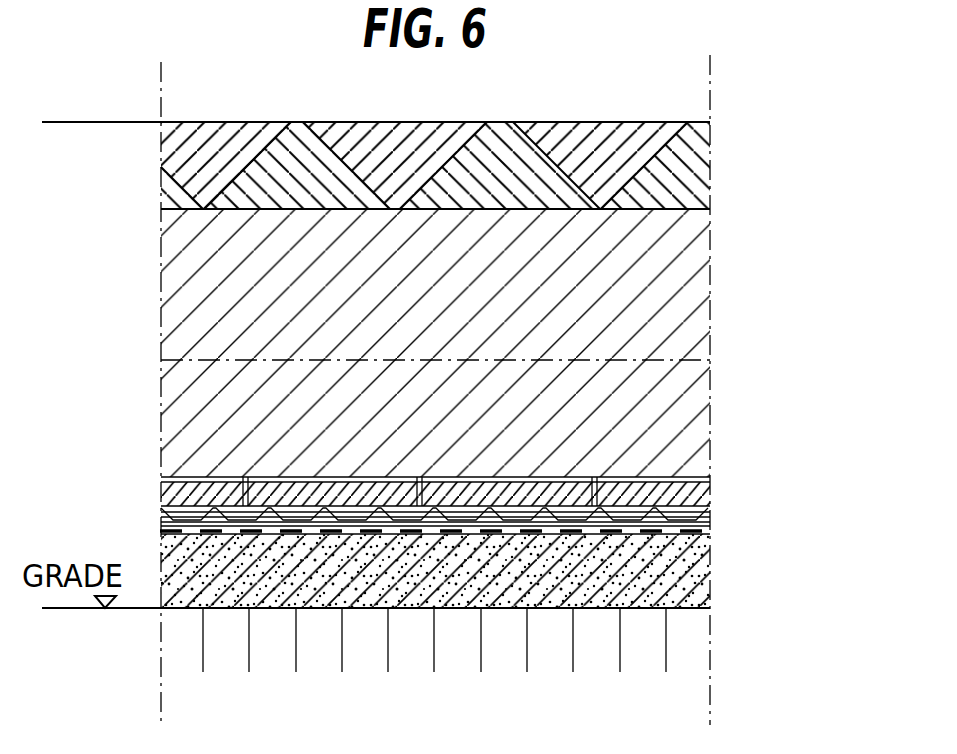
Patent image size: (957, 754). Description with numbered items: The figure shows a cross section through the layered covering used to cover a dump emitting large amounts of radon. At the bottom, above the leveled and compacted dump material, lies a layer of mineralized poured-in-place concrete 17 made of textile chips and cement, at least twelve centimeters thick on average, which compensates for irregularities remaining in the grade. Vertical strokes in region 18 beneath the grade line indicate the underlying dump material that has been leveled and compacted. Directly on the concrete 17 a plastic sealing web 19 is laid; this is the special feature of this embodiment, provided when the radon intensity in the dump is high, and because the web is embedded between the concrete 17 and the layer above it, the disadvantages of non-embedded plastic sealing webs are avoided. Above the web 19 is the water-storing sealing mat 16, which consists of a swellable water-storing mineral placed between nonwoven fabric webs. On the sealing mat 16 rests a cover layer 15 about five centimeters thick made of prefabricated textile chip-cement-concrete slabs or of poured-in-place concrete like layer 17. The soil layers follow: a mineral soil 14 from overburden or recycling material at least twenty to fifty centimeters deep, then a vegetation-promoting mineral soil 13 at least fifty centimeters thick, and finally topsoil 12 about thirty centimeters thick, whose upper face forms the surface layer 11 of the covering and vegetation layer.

The surface layer 11 is at (127, 110).
The topsoil 12 is at (683, 178).
The mineral soil promoting vegetation 13 is at (683, 294).
The mineral soil from overburden or recycling material 14 is at (683, 411).
The cover layer 15 is at (710, 487).
The sealing mat 16 is at (710, 518).
The plastic sealing web 19 is at (710, 530).
The mineralized poured-in-place concrete layer 17 is at (710, 575).
The subgrade 18 is at (683, 673).